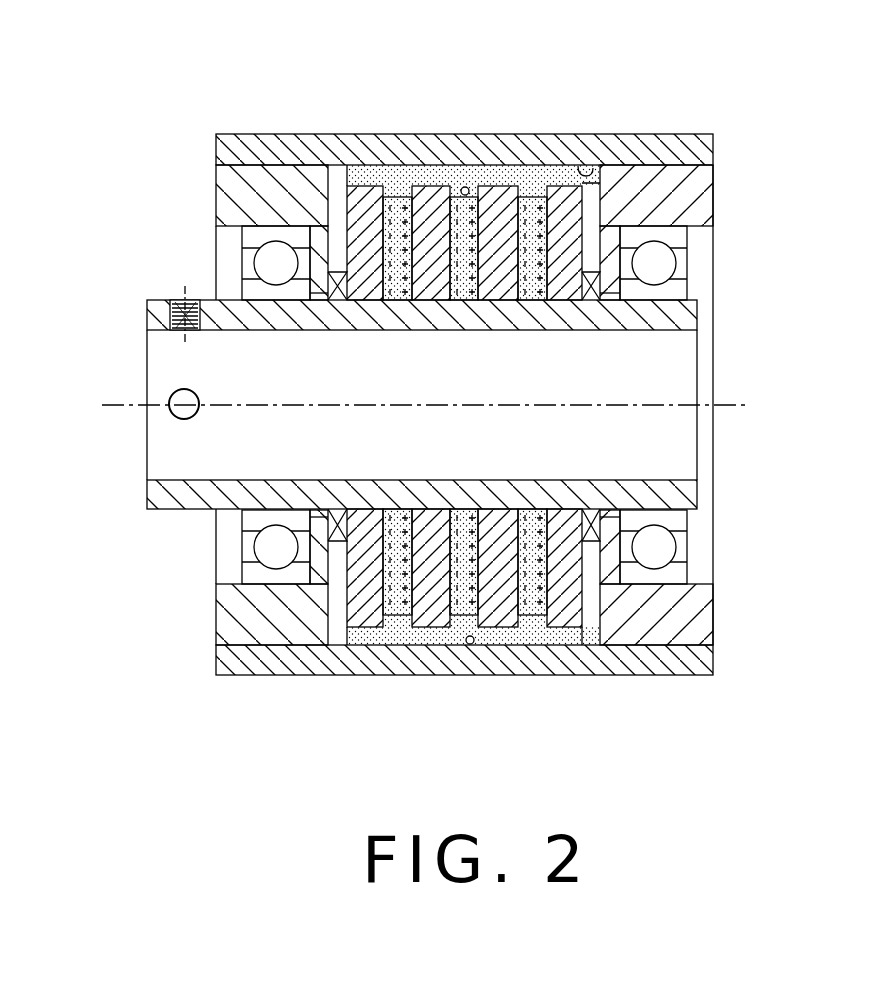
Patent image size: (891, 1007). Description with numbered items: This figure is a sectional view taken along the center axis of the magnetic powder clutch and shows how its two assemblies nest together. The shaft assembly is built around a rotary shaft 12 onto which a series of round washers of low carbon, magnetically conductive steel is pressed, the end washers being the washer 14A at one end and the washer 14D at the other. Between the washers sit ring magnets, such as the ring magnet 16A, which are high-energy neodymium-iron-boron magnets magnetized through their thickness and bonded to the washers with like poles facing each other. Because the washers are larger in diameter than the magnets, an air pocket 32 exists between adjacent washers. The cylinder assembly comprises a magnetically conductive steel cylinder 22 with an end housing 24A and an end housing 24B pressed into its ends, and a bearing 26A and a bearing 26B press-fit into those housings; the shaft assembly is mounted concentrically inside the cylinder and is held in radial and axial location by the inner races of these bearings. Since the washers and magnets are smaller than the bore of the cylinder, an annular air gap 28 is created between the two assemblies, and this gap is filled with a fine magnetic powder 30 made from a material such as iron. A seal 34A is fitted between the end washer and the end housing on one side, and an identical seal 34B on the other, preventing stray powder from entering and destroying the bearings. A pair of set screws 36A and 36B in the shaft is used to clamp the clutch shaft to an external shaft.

The rotary shaft 12 is at (165, 510).
The round washer 14A is at (348, 183).
The round washer 14D is at (565, 183).
The ring magnet 16A is at (400, 197).
The cylinder 22 is at (488, 134).
The end housing 24A is at (216, 585).
The end housing 24B is at (713, 617).
The bearing 26A is at (242, 257).
The bearing 26B is at (688, 263).
The annular air gap 28 is at (586, 172).
The fine magnetic powder 30 is at (468, 645).
The air pocket 32 is at (462, 175).
The seal 34A is at (337, 541).
The seal 34B is at (590, 541).
The set screw 36A is at (178, 302).
The set screw 36B is at (173, 415).